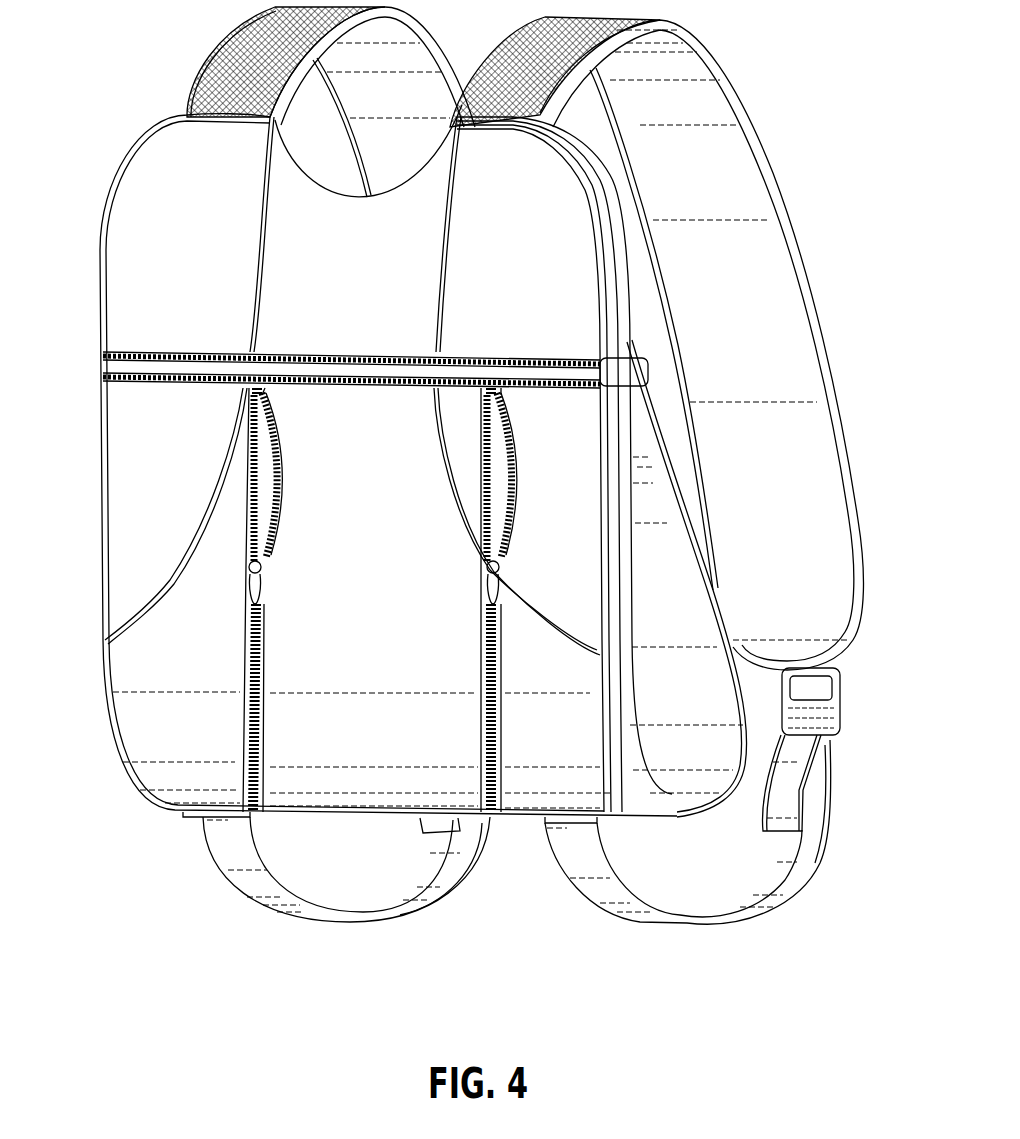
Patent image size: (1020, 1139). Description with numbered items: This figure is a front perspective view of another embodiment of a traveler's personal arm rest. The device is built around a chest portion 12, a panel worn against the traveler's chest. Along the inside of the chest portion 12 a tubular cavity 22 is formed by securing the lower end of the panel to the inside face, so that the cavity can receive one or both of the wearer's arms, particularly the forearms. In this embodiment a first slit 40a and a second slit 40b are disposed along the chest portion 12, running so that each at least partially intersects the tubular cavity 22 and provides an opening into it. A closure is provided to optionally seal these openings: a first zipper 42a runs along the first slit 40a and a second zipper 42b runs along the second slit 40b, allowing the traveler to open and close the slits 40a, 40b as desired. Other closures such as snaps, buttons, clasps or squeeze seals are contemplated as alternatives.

The chest portion 12 is at (67, 242).
The tubular cavity 22 is at (687, 748).
The first slit 40a is at (272, 470).
The second slit 40b is at (503, 470).
The first zipper 42a is at (257, 690).
The second zipper 42b is at (483, 720).